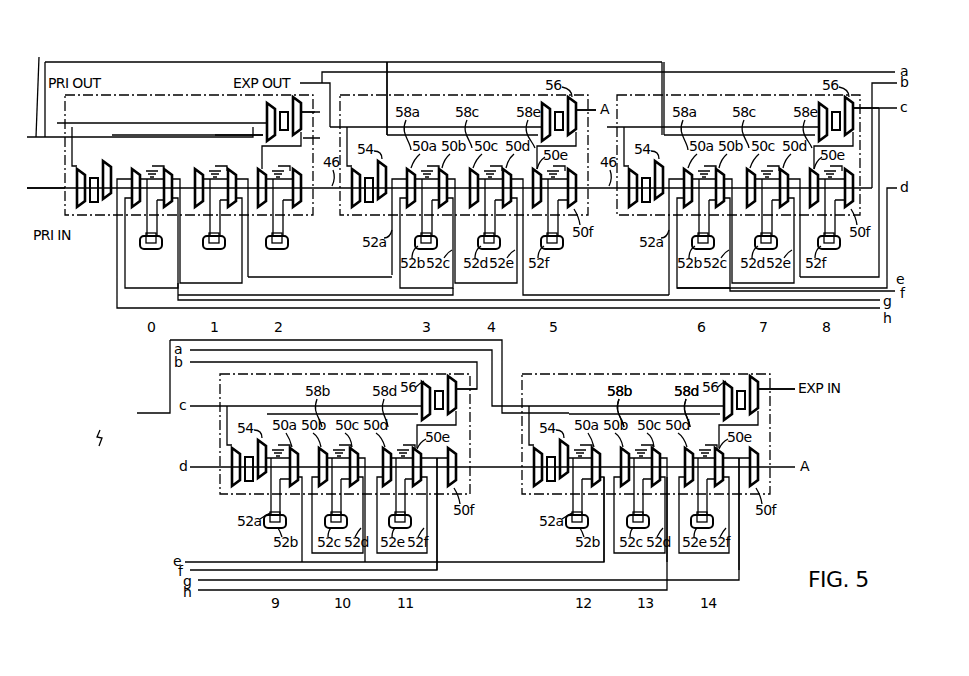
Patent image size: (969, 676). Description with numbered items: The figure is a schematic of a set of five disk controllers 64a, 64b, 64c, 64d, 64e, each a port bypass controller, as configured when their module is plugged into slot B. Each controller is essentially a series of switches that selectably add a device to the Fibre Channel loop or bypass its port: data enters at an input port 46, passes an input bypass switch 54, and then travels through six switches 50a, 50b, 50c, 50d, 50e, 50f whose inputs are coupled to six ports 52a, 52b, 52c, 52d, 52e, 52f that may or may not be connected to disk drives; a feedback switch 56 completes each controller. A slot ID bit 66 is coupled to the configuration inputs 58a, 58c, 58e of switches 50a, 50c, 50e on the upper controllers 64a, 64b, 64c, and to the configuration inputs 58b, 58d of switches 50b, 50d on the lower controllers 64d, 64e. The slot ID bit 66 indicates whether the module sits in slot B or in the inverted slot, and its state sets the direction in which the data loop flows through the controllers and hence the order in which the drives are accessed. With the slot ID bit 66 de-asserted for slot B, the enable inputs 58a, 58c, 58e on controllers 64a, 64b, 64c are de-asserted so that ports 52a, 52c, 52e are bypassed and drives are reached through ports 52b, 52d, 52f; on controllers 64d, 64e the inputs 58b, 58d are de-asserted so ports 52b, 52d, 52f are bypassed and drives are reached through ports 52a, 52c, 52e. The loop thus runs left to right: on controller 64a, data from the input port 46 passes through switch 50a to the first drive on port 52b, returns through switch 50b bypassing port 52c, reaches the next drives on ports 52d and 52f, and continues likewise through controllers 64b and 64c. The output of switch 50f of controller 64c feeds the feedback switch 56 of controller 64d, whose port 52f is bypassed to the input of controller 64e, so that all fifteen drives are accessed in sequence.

The input port 46 is at (46, 177).
The input bypass switch 54 is at (94, 174).
The switch 50a is at (147, 172).
The switch 50b is at (178, 172).
The switch 50c is at (209, 172).
The switch 50d is at (241, 172).
The switch 50e is at (275, 177).
The switch 50f is at (306, 204).
The port 52a is at (110, 227).
The port 52b is at (143, 226).
The port 52c is at (164, 236).
The port 52d is at (206, 226).
The port 52e is at (227, 236).
The port 52f is at (273, 226).
The feedback switch 56 is at (301, 133).
The configuration input 58a is at (162, 127).
The configuration input 58b is at (316, 405).
The configuration input 58c is at (187, 126).
The configuration input 58d is at (342, 405).
The configuration input 58e is at (240, 126).
The disk controller 64a is at (189, 146).
The disk controller 64b is at (464, 146).
The disk controller 64c is at (738, 146).
The disk controller 64d is at (326, 433).
The disk controller 64e is at (646, 424).
The slot ID bit 66 is at (84, 49).